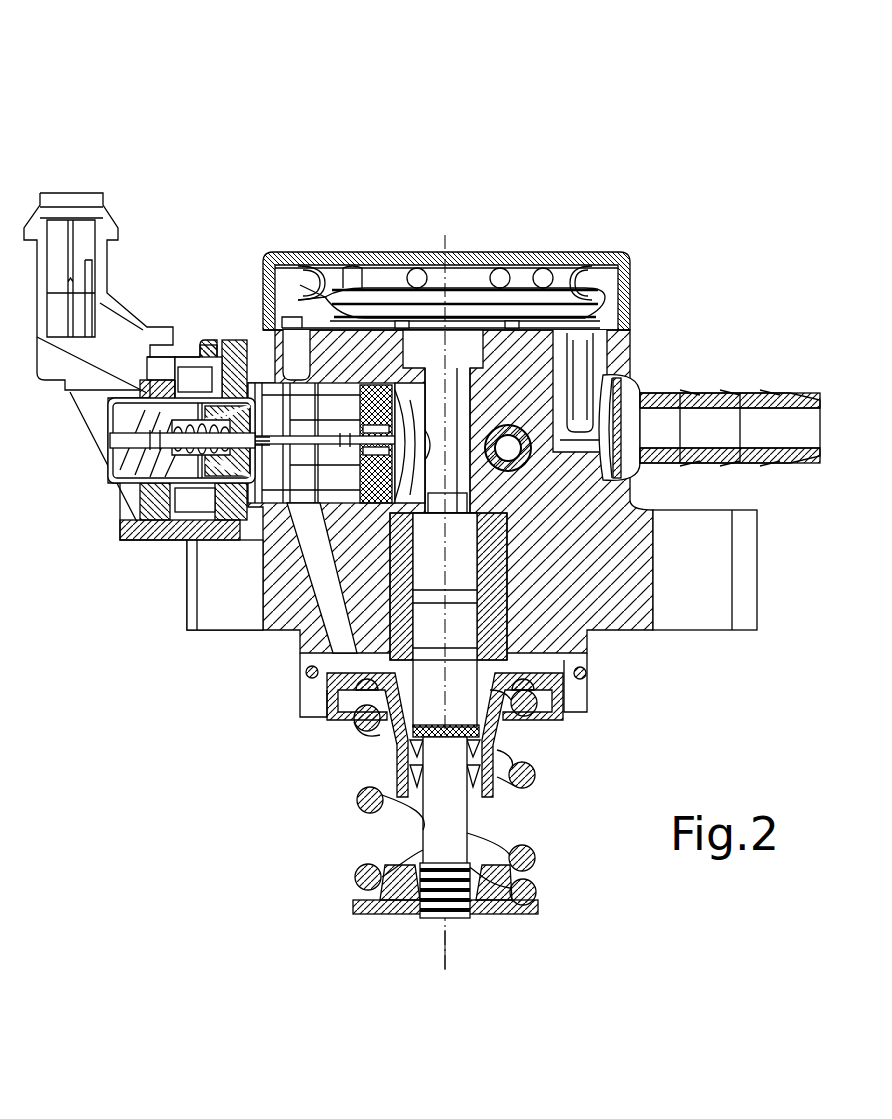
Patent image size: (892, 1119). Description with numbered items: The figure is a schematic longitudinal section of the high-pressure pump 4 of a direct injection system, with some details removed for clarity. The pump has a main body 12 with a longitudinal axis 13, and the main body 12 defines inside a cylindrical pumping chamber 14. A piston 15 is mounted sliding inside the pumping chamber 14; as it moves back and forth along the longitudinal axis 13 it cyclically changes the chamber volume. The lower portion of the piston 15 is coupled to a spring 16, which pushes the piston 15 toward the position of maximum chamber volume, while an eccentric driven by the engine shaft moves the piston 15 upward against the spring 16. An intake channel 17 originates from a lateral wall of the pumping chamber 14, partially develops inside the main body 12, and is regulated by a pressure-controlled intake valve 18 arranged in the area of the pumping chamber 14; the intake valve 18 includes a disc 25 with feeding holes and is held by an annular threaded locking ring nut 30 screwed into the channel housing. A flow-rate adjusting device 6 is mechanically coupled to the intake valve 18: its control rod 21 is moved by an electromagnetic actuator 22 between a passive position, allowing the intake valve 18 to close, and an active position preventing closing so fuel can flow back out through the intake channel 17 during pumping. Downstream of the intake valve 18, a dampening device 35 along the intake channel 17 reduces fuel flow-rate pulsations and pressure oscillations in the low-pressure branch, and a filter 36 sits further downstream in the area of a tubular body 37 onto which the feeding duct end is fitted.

The high-pressure pump 4 is at (130, 128).
The flow-rate adjusting device 6 is at (190, 326).
The main body 12 is at (630, 610).
The longitudinal axis 13 is at (443, 953).
The pumping chamber 14 is at (457, 453).
The piston 15 is at (452, 627).
The spring 16 is at (535, 862).
The intake channel 17 is at (302, 395).
The intake valve 18 is at (397, 424).
The control rod 21 is at (305, 440).
The electromagnetic actuator 22 is at (105, 420).
The disc 25 is at (380, 388).
The locking ring nut 30 is at (303, 352).
The dampening device 35 is at (545, 300).
The filter 36 is at (603, 440).
The tubular body 37 is at (770, 395).